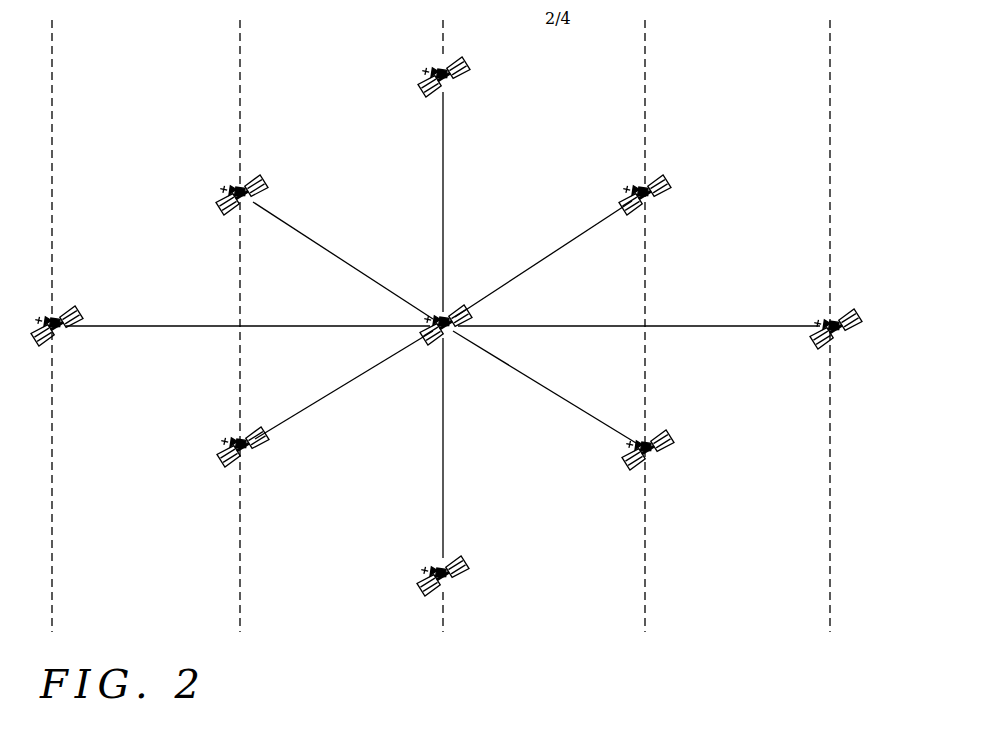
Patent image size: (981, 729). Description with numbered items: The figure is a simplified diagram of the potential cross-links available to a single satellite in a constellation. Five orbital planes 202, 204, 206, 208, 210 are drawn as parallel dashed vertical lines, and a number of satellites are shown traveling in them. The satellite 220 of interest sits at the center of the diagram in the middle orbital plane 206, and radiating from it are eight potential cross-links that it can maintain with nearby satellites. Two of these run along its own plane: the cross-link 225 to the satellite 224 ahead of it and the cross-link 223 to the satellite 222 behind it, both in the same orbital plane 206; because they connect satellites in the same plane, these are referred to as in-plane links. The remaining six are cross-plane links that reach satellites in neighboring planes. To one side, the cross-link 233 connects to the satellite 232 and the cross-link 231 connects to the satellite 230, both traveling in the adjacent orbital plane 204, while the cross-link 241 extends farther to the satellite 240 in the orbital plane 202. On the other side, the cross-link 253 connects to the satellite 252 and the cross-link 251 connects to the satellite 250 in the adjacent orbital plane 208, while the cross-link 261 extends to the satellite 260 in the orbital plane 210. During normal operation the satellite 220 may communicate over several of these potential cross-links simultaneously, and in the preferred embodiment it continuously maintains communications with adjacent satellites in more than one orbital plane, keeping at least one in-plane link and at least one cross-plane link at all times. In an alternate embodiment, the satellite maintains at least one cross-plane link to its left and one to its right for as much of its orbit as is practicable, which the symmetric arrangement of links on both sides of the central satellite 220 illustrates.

The orbital plane 202 is at (53, 114).
The orbital plane 204 is at (240, 132).
The orbital plane 206 is at (443, 38).
The orbital plane 208 is at (646, 96).
The orbital plane 210 is at (830, 102).
The satellite 220 is at (452, 340).
The satellite 222 is at (458, 556).
The cross-link 223 is at (443, 468).
The satellite 224 is at (455, 83).
The cross-link 225 is at (443, 188).
The satellite 230 is at (225, 470).
The cross-link 231 is at (365, 373).
The satellite 232 is at (234, 190).
The cross-link 233 is at (327, 254).
The satellite 240 is at (58, 338).
The cross-link 241 is at (200, 326).
The satellite 250 is at (667, 450).
The cross-link 251 is at (540, 386).
The satellite 252 is at (664, 205).
The cross-link 253 is at (542, 262).
The satellite 260 is at (820, 350).
The cross-link 261 is at (748, 328).